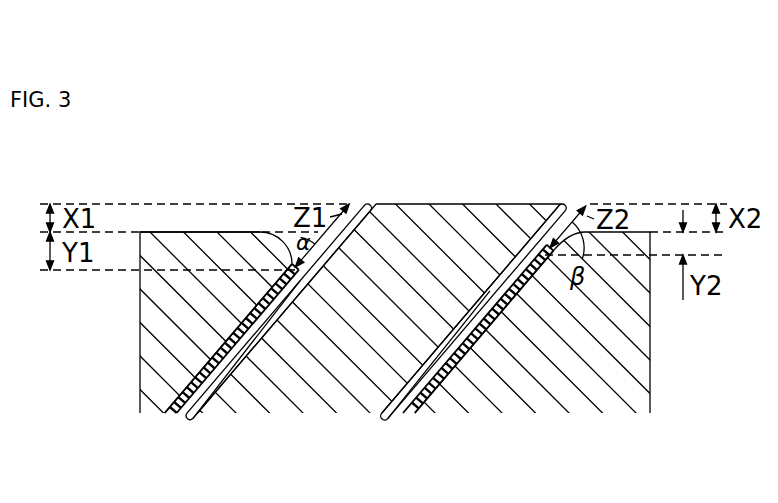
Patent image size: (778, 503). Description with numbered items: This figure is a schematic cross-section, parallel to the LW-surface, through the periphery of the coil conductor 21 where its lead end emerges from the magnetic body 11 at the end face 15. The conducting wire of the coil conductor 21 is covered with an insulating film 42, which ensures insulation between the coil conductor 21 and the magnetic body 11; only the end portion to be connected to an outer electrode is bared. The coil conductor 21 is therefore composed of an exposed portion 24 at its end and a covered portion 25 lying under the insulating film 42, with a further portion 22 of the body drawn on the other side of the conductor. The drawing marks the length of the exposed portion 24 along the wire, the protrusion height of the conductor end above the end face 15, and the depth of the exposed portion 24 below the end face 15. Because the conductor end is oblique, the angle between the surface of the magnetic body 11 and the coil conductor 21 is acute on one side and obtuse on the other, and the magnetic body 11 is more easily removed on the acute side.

The magnetic body 11 is at (238, 252).
The end face 15 is at (175, 232).
The coil conductor 21 is at (402, 242).
The third member 22 is at (551, 204).
The exposed portion 24 is at (364, 209).
The covered portion 25 is at (254, 344).
The insulating film 42 is at (212, 345).